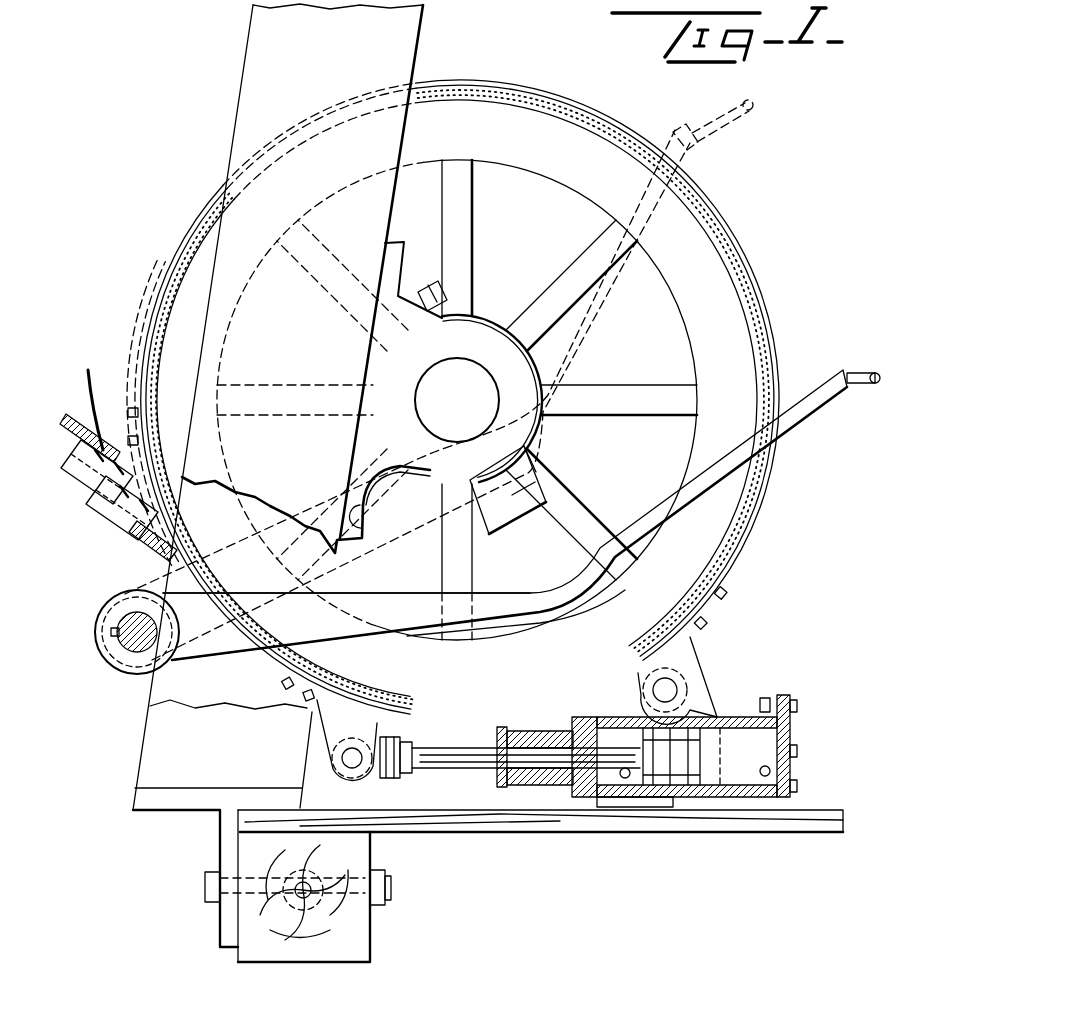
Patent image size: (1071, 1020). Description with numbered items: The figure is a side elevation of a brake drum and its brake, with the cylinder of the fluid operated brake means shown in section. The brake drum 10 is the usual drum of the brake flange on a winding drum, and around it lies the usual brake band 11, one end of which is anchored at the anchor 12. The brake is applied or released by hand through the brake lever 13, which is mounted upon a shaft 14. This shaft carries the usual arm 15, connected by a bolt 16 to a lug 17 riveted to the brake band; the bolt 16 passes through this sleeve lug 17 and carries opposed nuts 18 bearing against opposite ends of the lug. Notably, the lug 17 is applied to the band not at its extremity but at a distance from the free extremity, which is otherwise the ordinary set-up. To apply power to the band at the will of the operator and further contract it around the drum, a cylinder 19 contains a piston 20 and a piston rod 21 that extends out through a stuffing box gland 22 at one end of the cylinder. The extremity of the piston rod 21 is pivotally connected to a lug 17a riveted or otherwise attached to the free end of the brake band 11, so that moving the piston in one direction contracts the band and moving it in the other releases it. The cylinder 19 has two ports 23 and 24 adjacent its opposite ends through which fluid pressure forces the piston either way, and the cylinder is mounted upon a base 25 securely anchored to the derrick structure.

The brake drum 10 is at (730, 329).
The brake band 11 is at (748, 528).
The anchor 12 is at (683, 658).
The brake lever 13 is at (802, 413).
The shaft 14 is at (130, 650).
The arm 15 is at (140, 588).
The bolt 16 is at (62, 425).
The lug 17 is at (95, 503).
The lug 17a is at (333, 727).
The opposed nuts 18 is at (87, 397).
The cylinder 19 is at (747, 770).
The piston 20 is at (683, 772).
The piston rod 21 is at (472, 760).
The stuffing box gland 22 is at (567, 783).
The port 23 is at (772, 771).
The port 24 is at (626, 778).
The base 25 is at (765, 803).